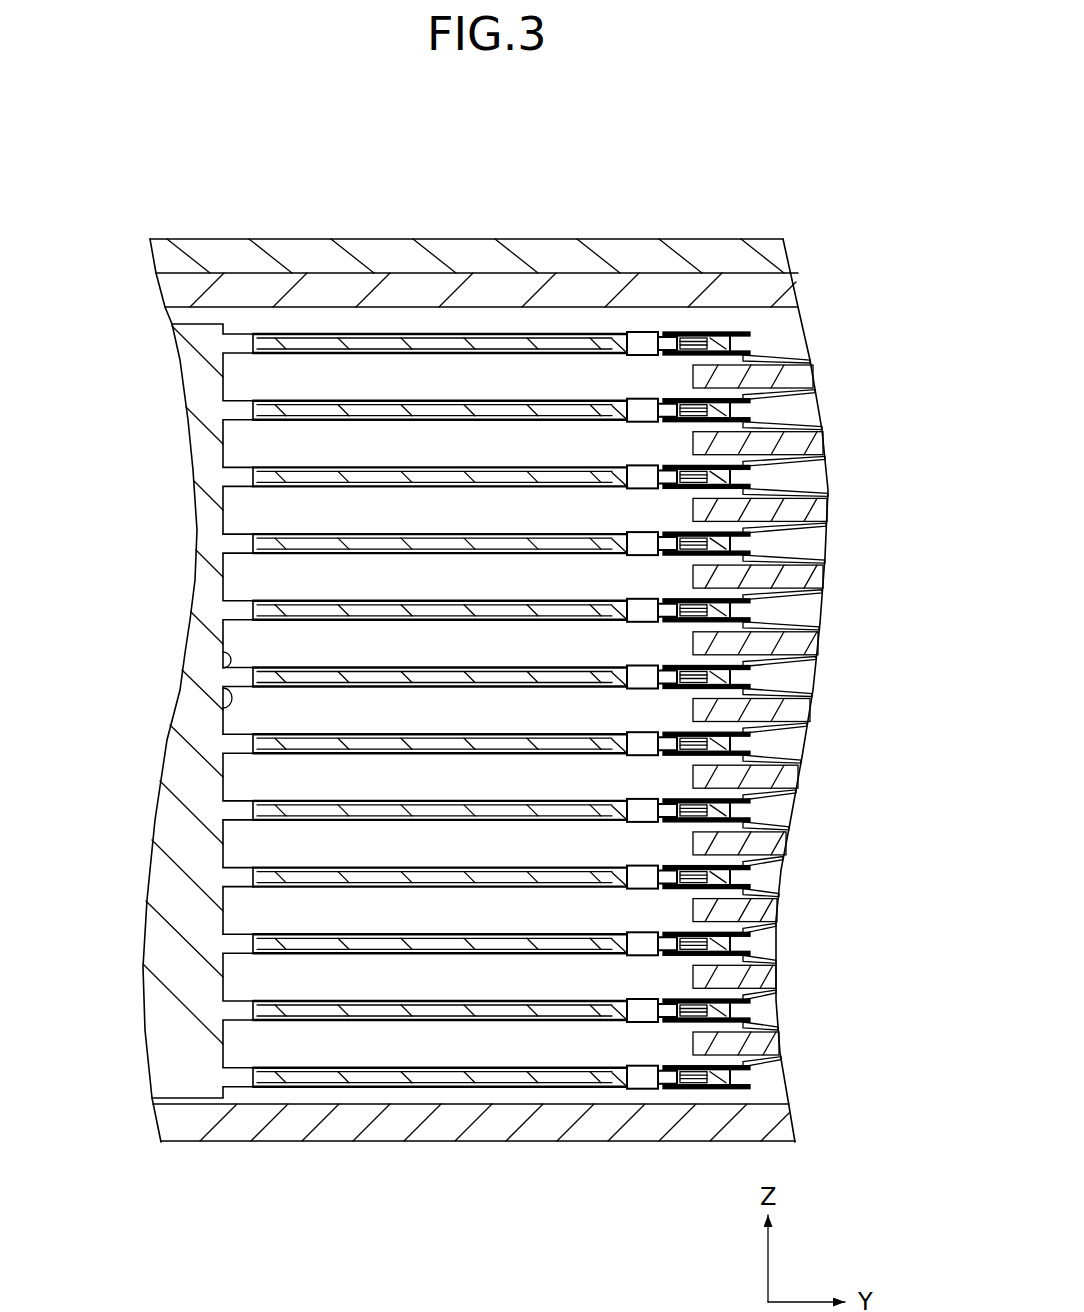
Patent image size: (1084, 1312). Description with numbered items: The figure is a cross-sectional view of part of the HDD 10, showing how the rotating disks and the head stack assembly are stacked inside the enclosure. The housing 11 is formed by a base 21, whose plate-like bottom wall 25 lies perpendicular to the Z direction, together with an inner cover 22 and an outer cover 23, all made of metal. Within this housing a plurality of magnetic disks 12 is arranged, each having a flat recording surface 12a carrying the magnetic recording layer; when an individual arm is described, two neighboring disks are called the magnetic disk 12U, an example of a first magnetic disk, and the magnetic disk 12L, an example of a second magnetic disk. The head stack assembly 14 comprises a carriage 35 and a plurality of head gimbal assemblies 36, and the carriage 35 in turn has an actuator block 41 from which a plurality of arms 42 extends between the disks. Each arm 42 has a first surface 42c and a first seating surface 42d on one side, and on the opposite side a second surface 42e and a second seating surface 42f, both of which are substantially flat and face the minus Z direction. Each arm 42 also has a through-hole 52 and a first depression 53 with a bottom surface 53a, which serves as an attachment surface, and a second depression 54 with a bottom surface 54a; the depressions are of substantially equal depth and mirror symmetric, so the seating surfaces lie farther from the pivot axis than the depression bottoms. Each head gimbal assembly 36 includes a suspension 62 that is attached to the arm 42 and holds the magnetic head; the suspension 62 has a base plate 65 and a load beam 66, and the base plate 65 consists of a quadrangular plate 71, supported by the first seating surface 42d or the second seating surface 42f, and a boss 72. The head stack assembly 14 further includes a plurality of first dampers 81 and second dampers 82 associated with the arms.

The HDD 10 is at (112, 182).
The housing 11 is at (706, 235).
The magnetic disk 12 is at (810, 378).
The recording surface 12a is at (778, 358).
The magnetic disk 12U is at (812, 642).
The magnetic disk 12L is at (800, 712).
The head stack assembly 14 is at (281, 245).
The carriage 35 is at (246, 326).
The base 21 is at (474, 1157).
The bottom wall 25 is at (337, 1132).
The inner cover 22 is at (525, 292).
The outer cover 23 is at (571, 258).
The head gimbal assembly 36 is at (764, 345).
The actuator block 41 is at (200, 340).
The arm 42 is at (322, 412).
The first surface 42c is at (226, 658).
The first seating surface 42d is at (722, 730).
The second surface 42e is at (226, 705).
The second seating surface 42f is at (745, 735).
The through-hole 52 is at (710, 720).
The first depression 53 is at (192, 616).
The bottom surface 53a is at (322, 667).
The second depression 54 is at (182, 723).
The bottom surface 54a is at (322, 688).
The suspension 62 is at (852, 711).
The load beam 66 is at (806, 662).
The base plate 65 is at (809, 710).
The plate 71 is at (668, 677).
The boss 72 is at (690, 700).
The first damper 81 is at (353, 667).
The second damper 82 is at (355, 688).